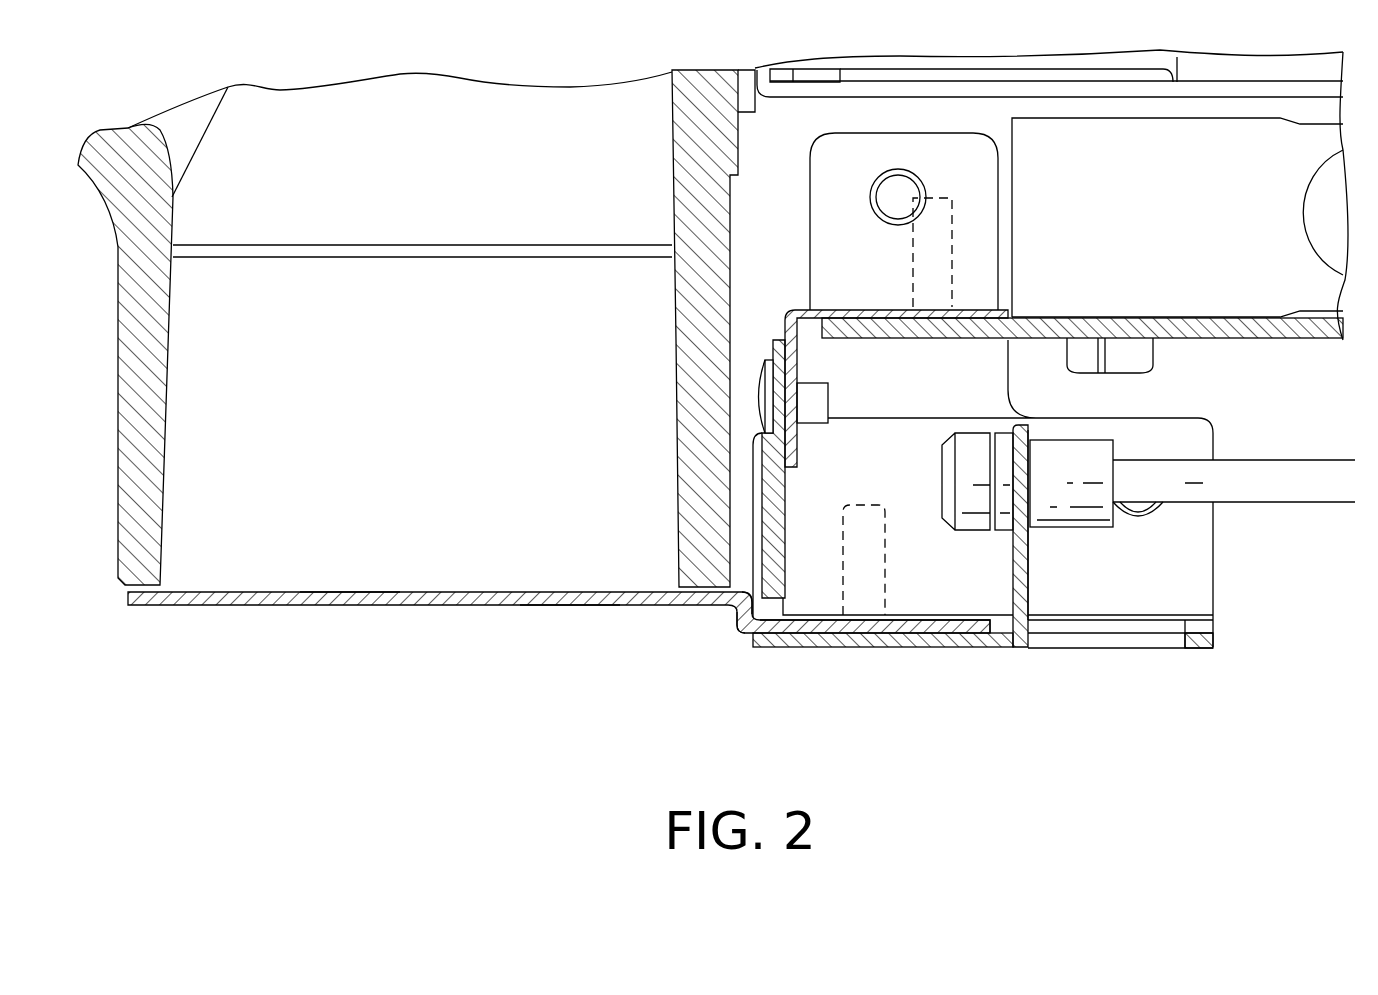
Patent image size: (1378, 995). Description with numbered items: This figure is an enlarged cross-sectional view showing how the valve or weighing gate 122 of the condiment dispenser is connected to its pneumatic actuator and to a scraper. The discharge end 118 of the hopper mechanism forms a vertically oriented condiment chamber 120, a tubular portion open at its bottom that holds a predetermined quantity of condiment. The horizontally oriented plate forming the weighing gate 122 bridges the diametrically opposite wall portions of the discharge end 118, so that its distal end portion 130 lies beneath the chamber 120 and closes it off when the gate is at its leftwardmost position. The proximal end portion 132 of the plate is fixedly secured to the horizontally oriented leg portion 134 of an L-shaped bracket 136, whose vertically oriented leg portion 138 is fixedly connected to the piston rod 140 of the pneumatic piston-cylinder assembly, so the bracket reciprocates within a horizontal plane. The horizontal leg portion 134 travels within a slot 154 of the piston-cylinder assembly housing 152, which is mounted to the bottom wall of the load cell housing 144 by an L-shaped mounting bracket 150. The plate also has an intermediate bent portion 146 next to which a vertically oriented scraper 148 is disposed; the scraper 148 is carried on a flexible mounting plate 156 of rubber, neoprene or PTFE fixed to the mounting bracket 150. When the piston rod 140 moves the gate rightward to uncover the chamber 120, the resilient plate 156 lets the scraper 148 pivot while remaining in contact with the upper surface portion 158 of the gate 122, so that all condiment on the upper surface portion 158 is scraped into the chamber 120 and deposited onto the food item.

The discharge end 118 is at (162, 437).
The condiment chamber 120 is at (392, 348).
The valve or weighing gate 122 is at (577, 607).
The distal end portion 130 is at (281, 608).
The proximal end portion 132 is at (783, 622).
The horizontally oriented leg portion 134 is at (942, 640).
The L-shaped bracket 136 is at (1020, 645).
The vertically oriented leg portion 138 is at (1030, 575).
The piston rod 140 is at (1240, 470).
The load cell housing 144 is at (1082, 330).
The intermediate bent portion 146 is at (740, 630).
The scraper 148 is at (768, 522).
The L-shaped mounting bracket 150 is at (785, 313).
The piston-cylinder assembly housing 152 is at (903, 478).
The slot 154 is at (1130, 638).
The flexible mounting plate 156 is at (783, 463).
The upper surface portion 158 is at (352, 592).